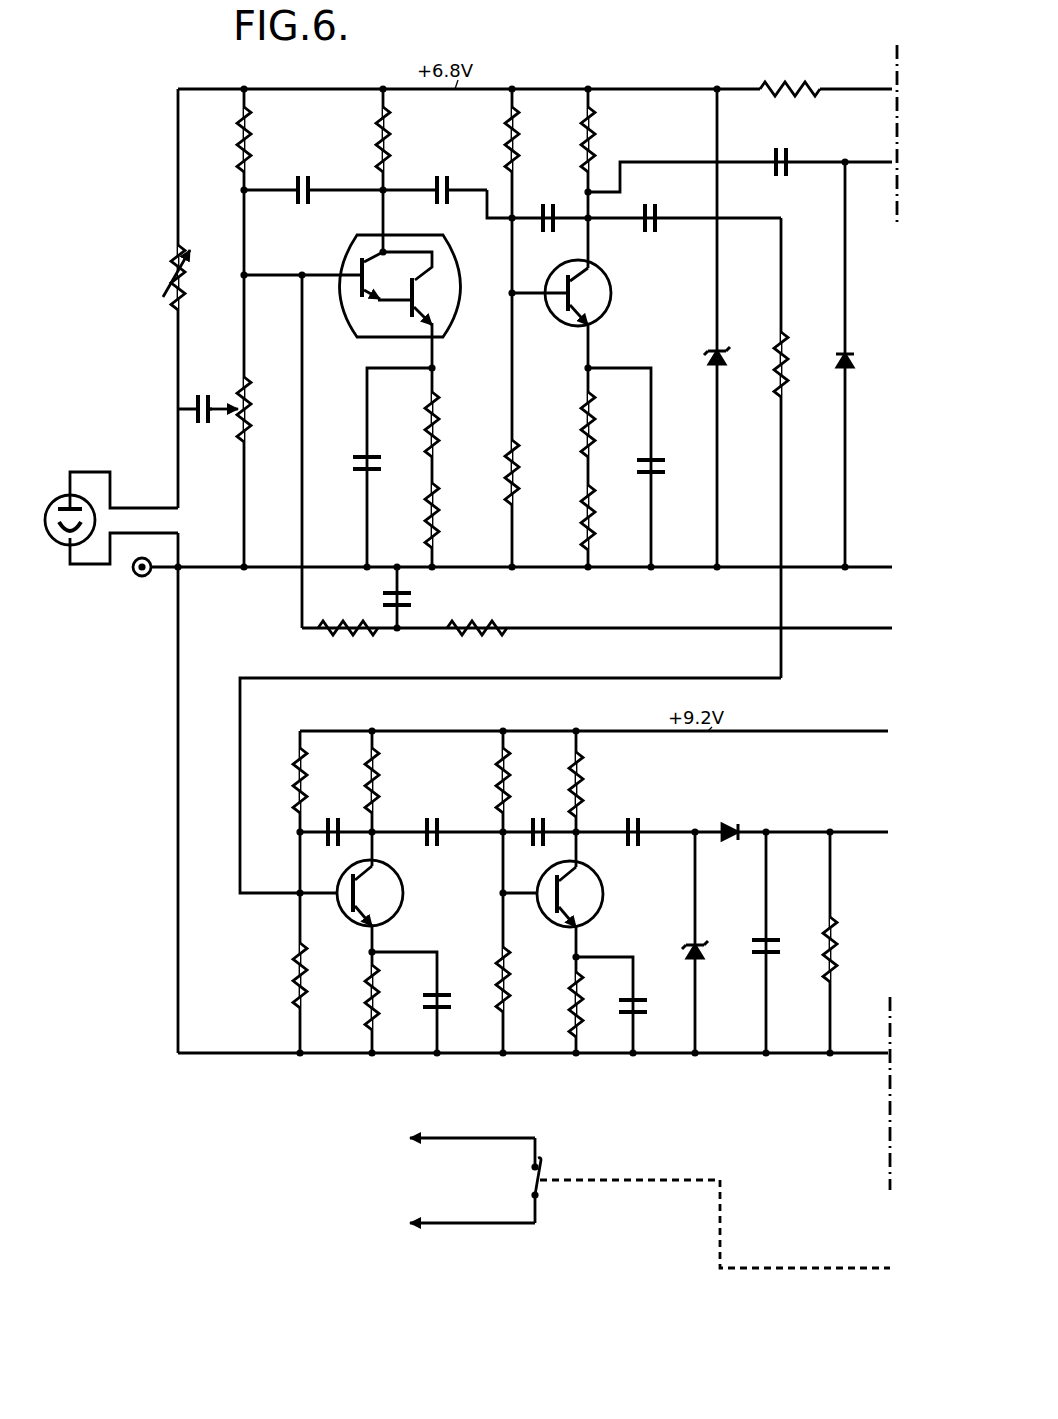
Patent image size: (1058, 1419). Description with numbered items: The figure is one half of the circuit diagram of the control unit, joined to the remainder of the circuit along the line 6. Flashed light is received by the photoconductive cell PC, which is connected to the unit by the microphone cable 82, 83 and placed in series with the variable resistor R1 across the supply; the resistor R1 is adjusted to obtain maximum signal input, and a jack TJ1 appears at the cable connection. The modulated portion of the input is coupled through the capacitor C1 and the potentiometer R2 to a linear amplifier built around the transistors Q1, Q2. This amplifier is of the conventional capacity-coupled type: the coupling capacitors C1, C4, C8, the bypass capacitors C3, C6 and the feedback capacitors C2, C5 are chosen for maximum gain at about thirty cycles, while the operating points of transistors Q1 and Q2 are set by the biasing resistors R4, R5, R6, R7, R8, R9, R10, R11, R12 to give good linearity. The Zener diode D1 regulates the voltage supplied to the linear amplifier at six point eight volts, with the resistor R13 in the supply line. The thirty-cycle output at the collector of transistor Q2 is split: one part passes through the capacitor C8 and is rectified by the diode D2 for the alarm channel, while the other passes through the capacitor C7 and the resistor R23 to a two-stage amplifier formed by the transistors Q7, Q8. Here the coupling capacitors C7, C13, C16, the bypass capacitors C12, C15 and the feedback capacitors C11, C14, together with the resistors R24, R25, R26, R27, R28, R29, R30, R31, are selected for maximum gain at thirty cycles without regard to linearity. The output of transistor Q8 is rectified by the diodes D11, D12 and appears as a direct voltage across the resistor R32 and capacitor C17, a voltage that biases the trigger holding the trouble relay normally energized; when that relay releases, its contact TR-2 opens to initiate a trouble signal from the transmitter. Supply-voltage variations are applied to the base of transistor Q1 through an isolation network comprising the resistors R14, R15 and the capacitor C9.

The variable resistor R1 is at (172, 270).
The potentiometer R2 is at (252, 399).
The resistor R4 is at (252, 139).
The resistor R5 is at (391, 139).
The resistor R6 is at (441, 410).
The resistor R7 is at (442, 513).
The resistor R8 is at (505, 139).
The resistor R9 is at (505, 473).
The resistor R10 is at (596, 131).
The resistor R11 is at (580, 420).
The resistor R12 is at (580, 512).
The resistor R13 is at (784, 85).
The resistor R14 is at (349, 614).
The resistor R15 is at (483, 626).
The resistor R23 is at (772, 370).
The resistor R24 is at (292, 968).
The resistor R25 is at (293, 775).
The resistor R26 is at (365, 994).
The resistor R27 is at (381, 768).
The resistor R28 is at (496, 971).
The resistor R29 is at (496, 783).
The resistor R30 is at (585, 772).
The resistor R31 is at (570, 996).
The resistor R32 is at (838, 941).
The capacitor C1 is at (201, 393).
The feedback capacitor C2 is at (309, 175).
The bypass capacitor C3 is at (355, 453).
The coupling capacitor C4 is at (446, 175).
The feedback capacitor C5 is at (543, 203).
The bypass capacitor C6 is at (662, 457).
The capacitor C7 is at (653, 203).
The capacitor C8 is at (779, 148).
The capacitor C9 is at (413, 605).
The feedback capacitor C11 is at (336, 817).
The bypass capacitor C12 is at (420, 992).
The coupling capacitor C13 is at (430, 847).
The feedback capacitor C14 is at (538, 817).
The bypass capacitor C15 is at (618, 1014).
The coupling capacitor C16 is at (631, 817).
The capacitor C17 is at (750, 937).
The transistor Q1 is at (342, 246).
The transistor Q2 is at (604, 268).
The transistor Q7 is at (404, 894).
The transistor Q8 is at (604, 888).
The Zener diode D1 is at (703, 351).
The diode D2 is at (850, 351).
The diode D11 is at (690, 942).
The diode D12 is at (728, 824).
The photoconductive cell PC is at (60, 545).
The test jack TJ1 is at (141, 577).
The microphone cable 82 is at (131, 507).
The microphone cable 83 is at (170, 531).
The trouble relay contact TR-2 is at (533, 1184).
The joining line 6 is at (892, 621).